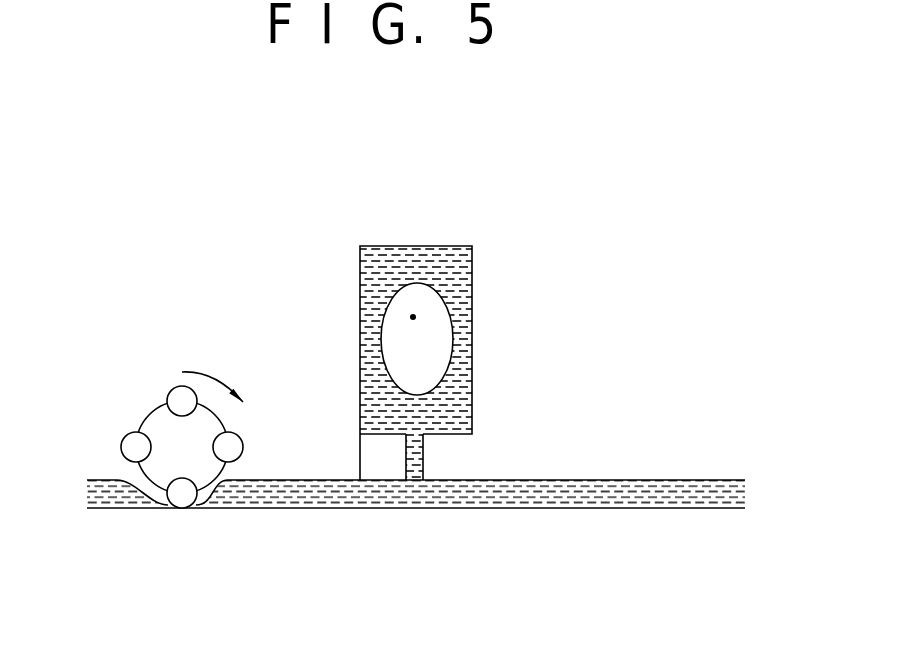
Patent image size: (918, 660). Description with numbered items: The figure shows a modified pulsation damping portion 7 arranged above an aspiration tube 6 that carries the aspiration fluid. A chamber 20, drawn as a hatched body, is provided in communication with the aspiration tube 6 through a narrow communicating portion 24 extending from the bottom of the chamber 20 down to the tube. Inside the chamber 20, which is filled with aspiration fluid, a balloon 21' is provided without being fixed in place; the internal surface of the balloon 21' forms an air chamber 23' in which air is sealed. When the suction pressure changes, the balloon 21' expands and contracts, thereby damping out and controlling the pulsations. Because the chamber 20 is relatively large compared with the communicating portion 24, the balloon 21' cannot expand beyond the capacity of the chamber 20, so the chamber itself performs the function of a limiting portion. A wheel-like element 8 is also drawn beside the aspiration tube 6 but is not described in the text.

The aspiration tube 6 is at (668, 493).
The damping portion 7 is at (426, 299).
The roller 8 is at (140, 381).
The chamber 20 is at (478, 302).
The balloon 21' is at (362, 328).
The air chamber 23' is at (464, 219).
The communicating portion 24 is at (378, 461).